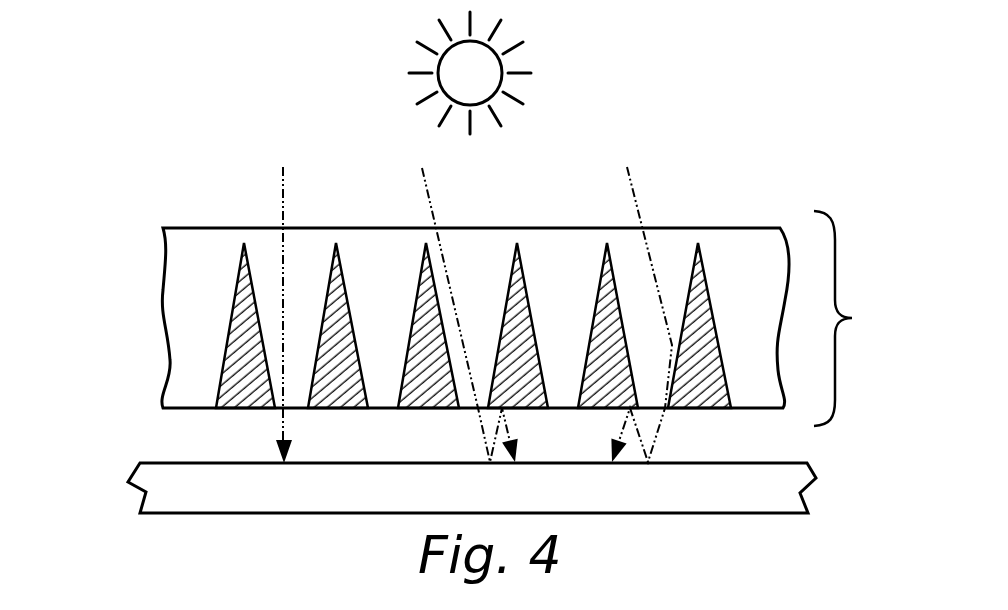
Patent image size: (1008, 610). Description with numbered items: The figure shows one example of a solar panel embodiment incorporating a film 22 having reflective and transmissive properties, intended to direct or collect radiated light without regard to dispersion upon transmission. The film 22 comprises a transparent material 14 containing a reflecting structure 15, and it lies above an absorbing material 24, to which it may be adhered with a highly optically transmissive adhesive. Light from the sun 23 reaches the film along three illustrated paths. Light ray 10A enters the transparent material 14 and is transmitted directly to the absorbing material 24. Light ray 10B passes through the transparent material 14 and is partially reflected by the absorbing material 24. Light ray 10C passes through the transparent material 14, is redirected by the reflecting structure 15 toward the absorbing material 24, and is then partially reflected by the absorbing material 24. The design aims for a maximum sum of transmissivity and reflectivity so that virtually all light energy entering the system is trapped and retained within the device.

The sun 23 is at (503, 62).
The light ray 10A is at (283, 200).
The light ray 10B is at (428, 203).
The light ray 10C is at (635, 205).
The transparent material 14 is at (178, 270).
The reflecting structure 15 is at (230, 312).
The film 22 is at (851, 318).
The absorbing material 24 is at (150, 462).